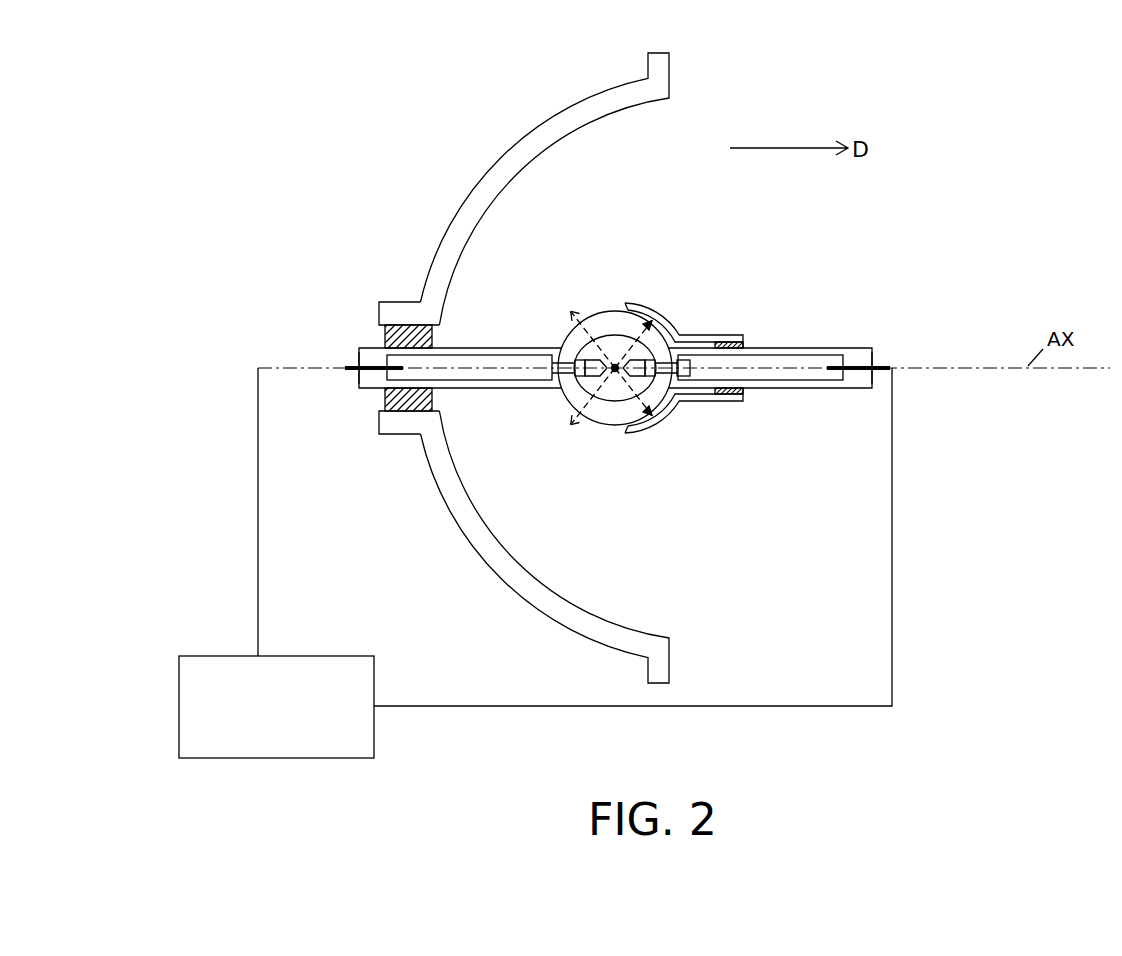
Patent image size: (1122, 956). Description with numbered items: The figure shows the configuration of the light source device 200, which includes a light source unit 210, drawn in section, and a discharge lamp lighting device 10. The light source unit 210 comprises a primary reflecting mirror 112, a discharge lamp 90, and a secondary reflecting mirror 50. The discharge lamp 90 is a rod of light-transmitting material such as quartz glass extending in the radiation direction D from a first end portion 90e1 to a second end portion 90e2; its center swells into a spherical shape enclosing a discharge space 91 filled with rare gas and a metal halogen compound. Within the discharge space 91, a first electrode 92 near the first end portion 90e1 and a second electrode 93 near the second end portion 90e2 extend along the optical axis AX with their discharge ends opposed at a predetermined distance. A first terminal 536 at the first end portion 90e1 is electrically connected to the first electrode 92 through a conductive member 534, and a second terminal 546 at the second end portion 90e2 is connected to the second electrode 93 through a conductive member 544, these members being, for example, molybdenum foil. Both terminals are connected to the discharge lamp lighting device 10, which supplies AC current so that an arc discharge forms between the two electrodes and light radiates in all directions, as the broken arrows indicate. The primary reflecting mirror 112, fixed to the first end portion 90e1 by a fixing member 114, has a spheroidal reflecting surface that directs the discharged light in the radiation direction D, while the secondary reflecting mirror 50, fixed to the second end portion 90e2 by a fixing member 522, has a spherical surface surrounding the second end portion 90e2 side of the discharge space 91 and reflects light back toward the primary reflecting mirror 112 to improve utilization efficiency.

The light source device 200 is at (1013, 88).
The light source unit 210 is at (415, 148).
The primary reflecting mirror 112 is at (520, 153).
The fixing member 114 is at (372, 345).
The discharge lamp lighting device 10 is at (315, 655).
The conductive member 534 is at (483, 375).
The first terminal 536 is at (352, 378).
The first end portion 90e1 is at (372, 346).
The conductive member 544 is at (773, 372).
The second terminal 546 is at (880, 375).
The second end portion 90e2 is at (842, 348).
The discharge lamp 90 is at (600, 313).
The discharge space 91 is at (612, 398).
The first electrode 92 is at (562, 400).
The second electrode 93 is at (665, 401).
The secondary reflecting mirror 50 is at (643, 303).
The fixing member 522 is at (755, 335).